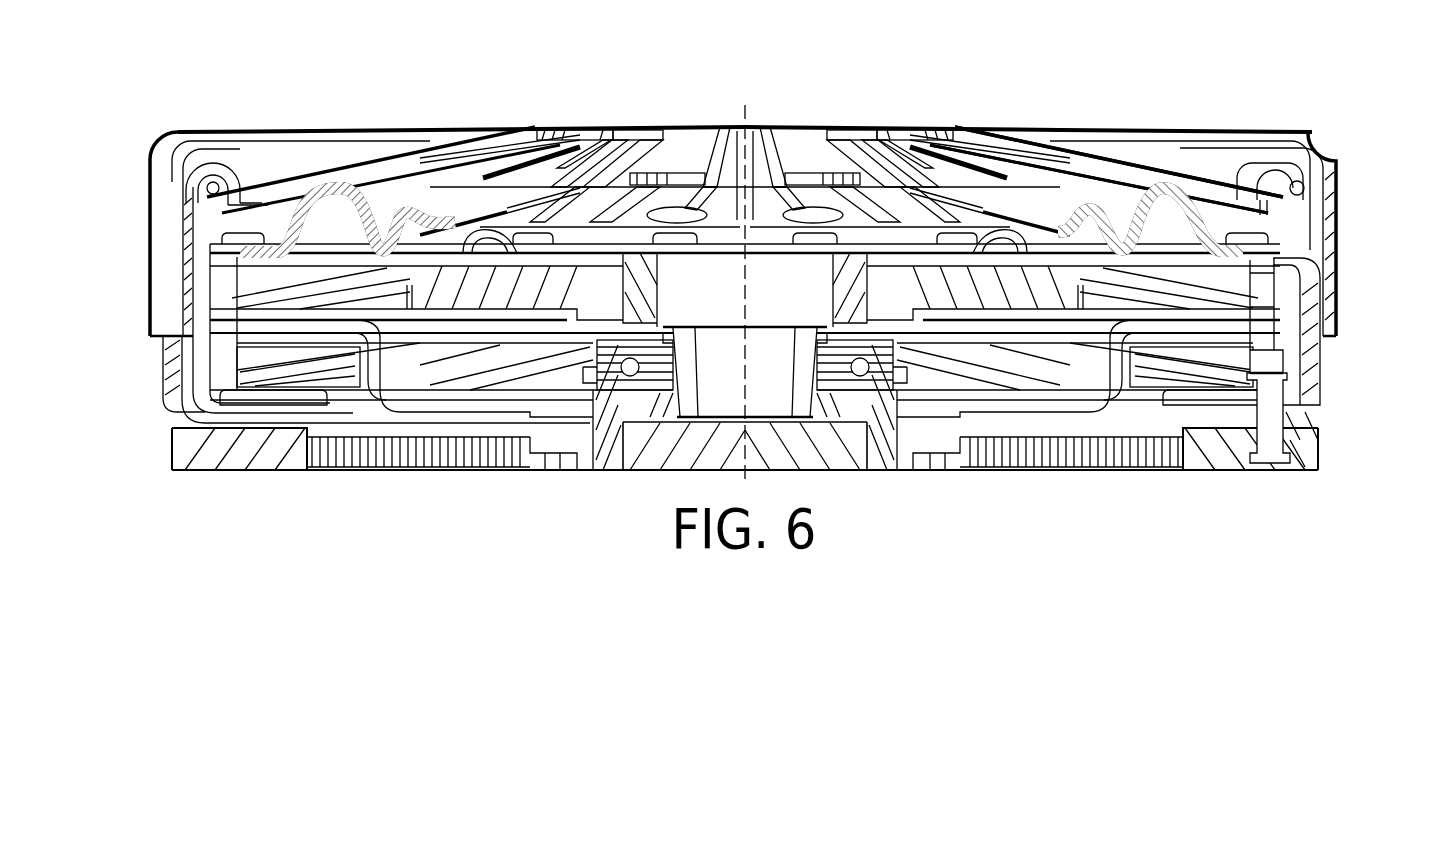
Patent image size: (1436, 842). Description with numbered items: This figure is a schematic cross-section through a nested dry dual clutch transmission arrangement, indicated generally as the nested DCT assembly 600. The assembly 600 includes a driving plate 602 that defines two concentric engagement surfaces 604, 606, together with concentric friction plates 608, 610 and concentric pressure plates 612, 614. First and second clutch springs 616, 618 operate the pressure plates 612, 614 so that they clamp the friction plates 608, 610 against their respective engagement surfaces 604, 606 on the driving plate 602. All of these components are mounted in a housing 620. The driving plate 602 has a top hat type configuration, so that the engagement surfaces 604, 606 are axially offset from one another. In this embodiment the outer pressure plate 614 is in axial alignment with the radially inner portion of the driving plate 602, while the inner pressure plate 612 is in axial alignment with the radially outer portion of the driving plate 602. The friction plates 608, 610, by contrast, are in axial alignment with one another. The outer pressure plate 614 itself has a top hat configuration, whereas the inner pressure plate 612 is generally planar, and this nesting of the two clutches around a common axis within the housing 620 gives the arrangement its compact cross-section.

The nested DCT assembly 600 is at (382, 104).
The driving plate 602 is at (548, 380).
The engagement surface 604 is at (500, 340).
The engagement surface 606 is at (281, 330).
The friction plate 608 is at (525, 318).
The friction plate 610 is at (245, 325).
The inner pressure plate 612 is at (460, 275).
The outer pressure plate 614 is at (248, 386).
The first clutch spring 616 is at (962, 205).
The second clutch spring 618 is at (820, 135).
The housing 620 is at (1338, 170).